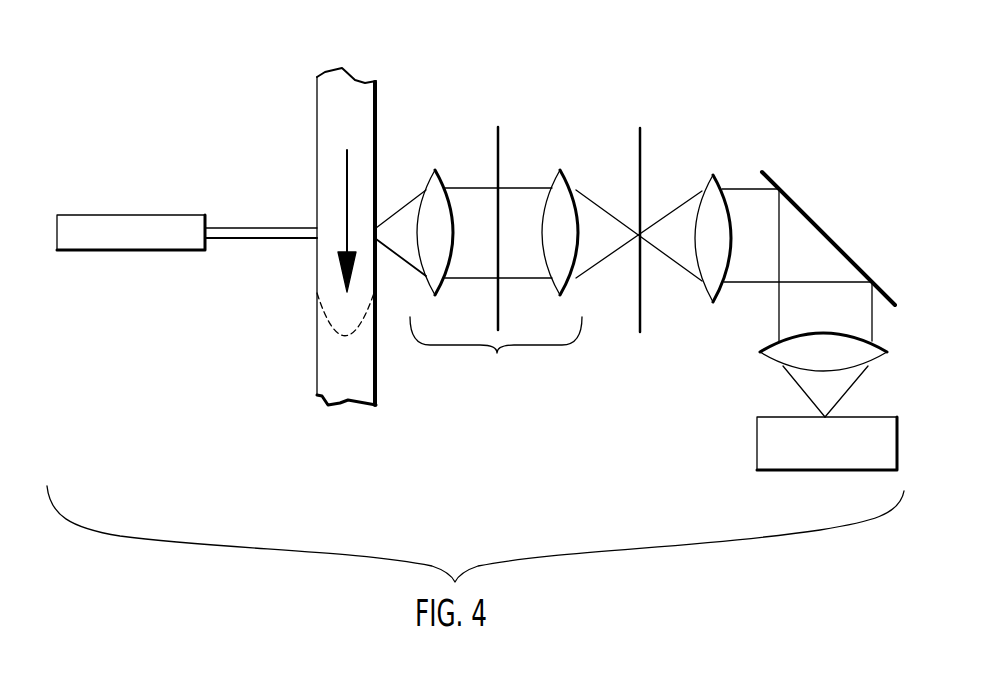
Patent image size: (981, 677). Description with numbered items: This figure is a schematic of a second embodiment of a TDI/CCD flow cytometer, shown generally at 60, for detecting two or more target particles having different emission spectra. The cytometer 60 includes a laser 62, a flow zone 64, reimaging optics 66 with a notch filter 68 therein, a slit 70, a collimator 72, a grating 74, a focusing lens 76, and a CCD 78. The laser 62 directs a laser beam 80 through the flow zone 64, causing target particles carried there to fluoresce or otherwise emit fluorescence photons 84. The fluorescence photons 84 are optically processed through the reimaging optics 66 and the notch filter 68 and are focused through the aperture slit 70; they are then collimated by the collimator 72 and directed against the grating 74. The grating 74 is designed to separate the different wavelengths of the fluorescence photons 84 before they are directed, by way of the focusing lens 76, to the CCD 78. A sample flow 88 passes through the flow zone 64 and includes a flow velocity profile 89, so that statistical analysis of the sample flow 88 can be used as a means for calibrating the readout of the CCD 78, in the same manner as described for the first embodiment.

The TDI/CCD flow cytometer 60 is at (638, 93).
The laser 62 is at (137, 215).
The flow zone 64 is at (376, 120).
The reimaging optics 66 is at (496, 279).
The notch filter 68 is at (500, 158).
The slit 70 is at (642, 173).
The collimator 72 is at (713, 193).
The grating 74 is at (822, 247).
The focusing lens 76 is at (810, 352).
The CCD 78 is at (787, 443).
The laser beam 80 is at (265, 230).
The fluorescence photons 84 is at (398, 228).
The sample flow 88 is at (345, 218).
The flow velocity profile 89 is at (330, 330).